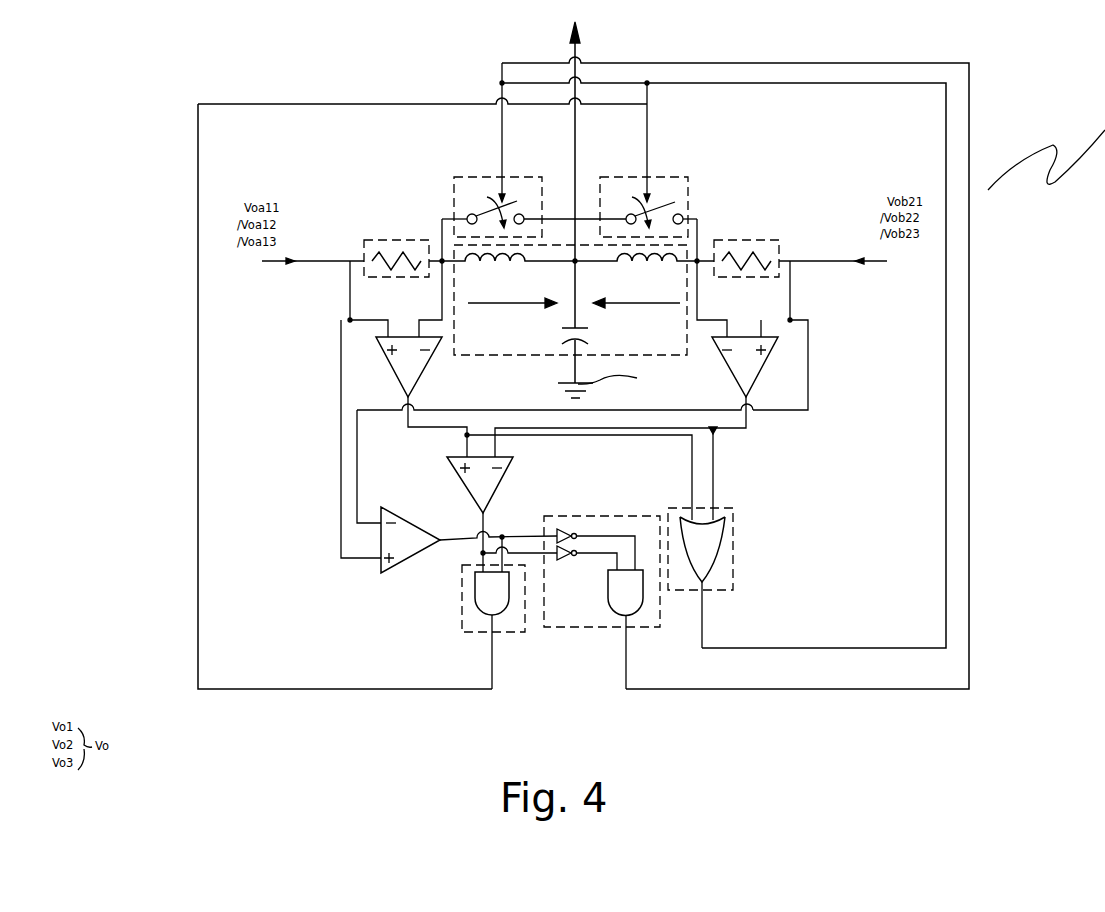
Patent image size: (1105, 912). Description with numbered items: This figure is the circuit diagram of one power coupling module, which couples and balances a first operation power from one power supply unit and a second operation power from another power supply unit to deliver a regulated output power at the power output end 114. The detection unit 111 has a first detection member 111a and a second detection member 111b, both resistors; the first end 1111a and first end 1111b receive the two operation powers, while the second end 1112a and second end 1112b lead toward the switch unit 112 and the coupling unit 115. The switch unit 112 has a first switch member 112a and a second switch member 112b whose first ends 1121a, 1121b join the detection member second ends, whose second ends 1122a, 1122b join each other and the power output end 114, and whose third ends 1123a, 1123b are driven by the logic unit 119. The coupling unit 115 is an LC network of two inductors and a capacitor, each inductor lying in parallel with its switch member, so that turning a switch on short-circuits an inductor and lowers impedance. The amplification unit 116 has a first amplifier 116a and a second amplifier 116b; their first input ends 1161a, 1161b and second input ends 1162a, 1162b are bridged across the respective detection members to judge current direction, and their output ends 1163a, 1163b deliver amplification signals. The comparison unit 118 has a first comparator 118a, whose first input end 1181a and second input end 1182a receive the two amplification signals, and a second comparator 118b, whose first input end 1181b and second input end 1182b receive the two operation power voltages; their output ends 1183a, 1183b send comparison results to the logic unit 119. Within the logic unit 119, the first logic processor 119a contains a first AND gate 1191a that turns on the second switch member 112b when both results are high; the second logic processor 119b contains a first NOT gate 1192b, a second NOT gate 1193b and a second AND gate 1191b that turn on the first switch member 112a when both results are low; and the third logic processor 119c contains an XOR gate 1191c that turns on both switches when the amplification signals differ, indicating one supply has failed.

The power output end 114 is at (580, 50).
The third end of the first switch member 1123a is at (502, 158).
The third end of the second switch member 1123b is at (648, 165).
The switch unit 112 is at (407, 329).
The first switch member 112a is at (487, 177).
The second switch member 112b is at (652, 177).
The first end of the first switch member 1121a is at (450, 214).
The first end of the second switch member 1121b is at (700, 236).
The second end of the first switch member 1122a is at (566, 214).
The second end of the second switch member 1122b is at (584, 214).
The detection unit 111 is at (469, 316).
The first detection member 111a is at (400, 240).
The second detection member 111b is at (757, 240).
The first end of the first detection member 1111a is at (313, 254).
The first end of the second detection member 1111b is at (833, 254).
The second end of the first detection member 1112a is at (441, 226).
The second end of the second detection member 1112b is at (700, 236).
The coupling unit 115 is at (670, 356).
The amplification unit 116 is at (482, 404).
The first amplifier 116a is at (400, 378).
The second amplifier 116b is at (750, 365).
The first input end of the first amplifier 1161a is at (388, 330).
The first input end of the second amplifier 1161b is at (765, 335).
The second input end of the first amplifier 1162a is at (419, 324).
The second input end of the second amplifier 1162b is at (727, 327).
The output end of the first amplifier 1163a is at (437, 422).
The output end of the second amplifier 1163b is at (620, 423).
The comparison unit 118 is at (382, 540).
The first comparator 118a is at (470, 485).
The second comparator 118b is at (397, 567).
The first input end of the first comparator 1181a is at (561, 476).
The first input end of the second comparator 1181b is at (368, 564).
The second input end of the first comparator 1182a is at (602, 474).
The second input end of the second comparator 1182b is at (368, 523).
The output end of the first comparator 1183a is at (498, 542).
The output end of the second comparator 1183b is at (501, 542).
The logic unit 119 is at (447, 600).
The first logic processor 119a is at (510, 633).
The second logic processor 119b is at (598, 628).
The third logic processor 119c is at (735, 582).
The first AND gate 1191a is at (485, 597).
The second AND gate 1191b is at (637, 607).
The XOR gate 1191c is at (707, 558).
The first NOT gate 1192b is at (565, 522).
The second NOT gate 1193b is at (565, 560).